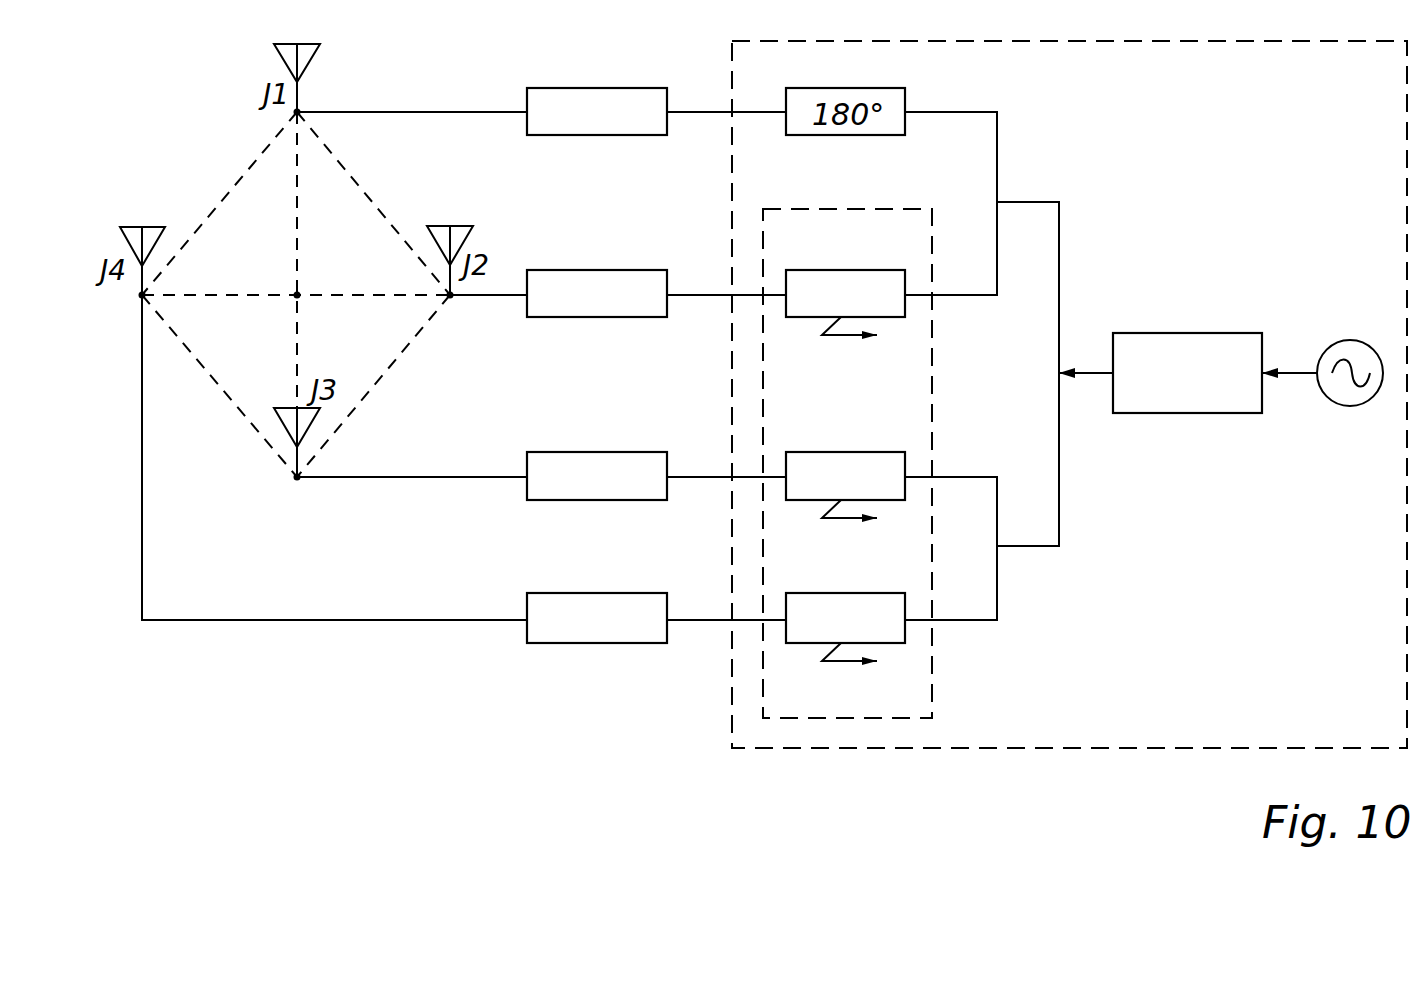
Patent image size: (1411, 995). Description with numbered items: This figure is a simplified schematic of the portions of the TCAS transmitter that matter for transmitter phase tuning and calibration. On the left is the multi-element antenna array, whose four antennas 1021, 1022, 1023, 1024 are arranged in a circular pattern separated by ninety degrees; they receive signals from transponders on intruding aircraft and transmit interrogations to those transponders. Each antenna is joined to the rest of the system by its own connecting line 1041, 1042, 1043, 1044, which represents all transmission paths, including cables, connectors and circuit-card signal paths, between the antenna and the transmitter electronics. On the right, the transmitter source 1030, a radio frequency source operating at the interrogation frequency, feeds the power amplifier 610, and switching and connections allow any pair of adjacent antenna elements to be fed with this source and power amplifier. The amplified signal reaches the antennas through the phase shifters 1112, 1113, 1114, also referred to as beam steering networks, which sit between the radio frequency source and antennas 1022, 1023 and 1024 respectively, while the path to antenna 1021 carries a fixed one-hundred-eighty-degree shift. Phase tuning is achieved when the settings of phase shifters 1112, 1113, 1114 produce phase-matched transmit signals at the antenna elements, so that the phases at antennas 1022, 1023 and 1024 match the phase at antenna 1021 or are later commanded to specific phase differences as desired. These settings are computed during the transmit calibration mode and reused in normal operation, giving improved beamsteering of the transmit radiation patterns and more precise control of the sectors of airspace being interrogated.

The antenna 1021 is at (285, 68).
The antenna 1022 is at (443, 262).
The antenna 1023 is at (289, 440).
The antenna 1024 is at (157, 226).
The connecting line 1041 is at (632, 95).
The connecting line 1042 is at (630, 278).
The connecting line 1043 is at (626, 460).
The connecting line 1044 is at (626, 602).
The phase shifter 1112 is at (801, 270).
The phase shifter 1113 is at (801, 452).
The phase shifter 1114 is at (797, 595).
The power amplifier 610 is at (1134, 335).
The transmitter source 1030 is at (1365, 405).